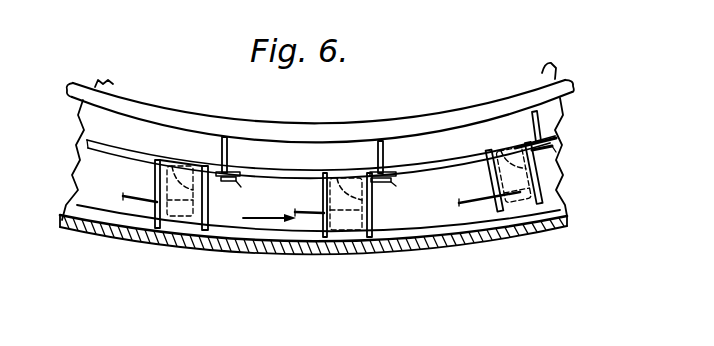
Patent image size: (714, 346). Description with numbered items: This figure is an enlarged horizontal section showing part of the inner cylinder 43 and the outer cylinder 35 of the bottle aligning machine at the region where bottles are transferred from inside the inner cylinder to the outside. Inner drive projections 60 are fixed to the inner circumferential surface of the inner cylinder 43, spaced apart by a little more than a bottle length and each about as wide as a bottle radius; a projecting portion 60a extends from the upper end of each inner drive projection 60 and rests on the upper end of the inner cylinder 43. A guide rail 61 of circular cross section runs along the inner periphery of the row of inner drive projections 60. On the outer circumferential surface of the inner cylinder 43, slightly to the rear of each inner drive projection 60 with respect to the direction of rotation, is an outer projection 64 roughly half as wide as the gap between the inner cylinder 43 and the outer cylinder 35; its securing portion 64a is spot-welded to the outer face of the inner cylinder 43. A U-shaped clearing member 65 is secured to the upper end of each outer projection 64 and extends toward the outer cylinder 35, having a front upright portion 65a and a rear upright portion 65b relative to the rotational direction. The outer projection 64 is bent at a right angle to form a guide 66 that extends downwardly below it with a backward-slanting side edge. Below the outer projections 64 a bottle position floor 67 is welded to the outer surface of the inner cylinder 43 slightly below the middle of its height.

The outer cylinder 35 is at (552, 229).
The inner cylinder 43 is at (434, 168).
The inner drive projection 60 is at (225, 137).
The projecting portion 60a is at (229, 172).
The guide rail 61 is at (181, 110).
The outer projection 64 is at (176, 222).
The securing portion 64a is at (238, 184).
The U-shaped clearing member 65 is at (163, 230).
The front upright portion 65a is at (205, 228).
The rear upright portion 65b is at (158, 172).
The guide 66 is at (126, 198).
The bottle position floor 67 is at (433, 222).